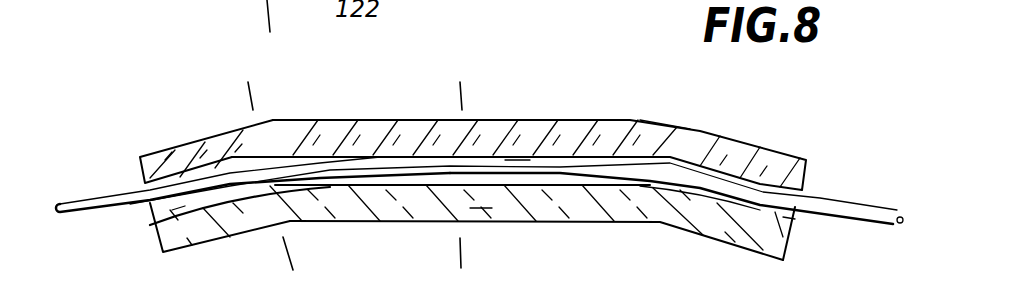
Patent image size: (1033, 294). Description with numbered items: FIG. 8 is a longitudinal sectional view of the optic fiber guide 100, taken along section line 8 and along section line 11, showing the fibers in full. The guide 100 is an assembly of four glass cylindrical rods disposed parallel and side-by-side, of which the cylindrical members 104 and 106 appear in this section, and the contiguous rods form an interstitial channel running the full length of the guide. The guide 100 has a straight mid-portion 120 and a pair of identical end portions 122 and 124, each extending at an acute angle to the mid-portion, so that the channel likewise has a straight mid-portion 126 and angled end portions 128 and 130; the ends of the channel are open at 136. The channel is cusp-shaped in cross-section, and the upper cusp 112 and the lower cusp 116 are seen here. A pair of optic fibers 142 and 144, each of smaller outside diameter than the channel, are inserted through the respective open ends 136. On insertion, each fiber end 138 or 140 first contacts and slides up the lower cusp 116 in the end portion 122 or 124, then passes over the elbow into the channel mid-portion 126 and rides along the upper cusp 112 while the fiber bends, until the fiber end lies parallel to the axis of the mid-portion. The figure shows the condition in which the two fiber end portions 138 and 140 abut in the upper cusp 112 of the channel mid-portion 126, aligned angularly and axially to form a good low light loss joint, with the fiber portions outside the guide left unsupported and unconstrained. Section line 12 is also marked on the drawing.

The section line 8— 8 is at (280, 37).
The section line of FIG. 11 is at (233, 84).
The section line 12 is at (450, 82).
The optic fiber guide 100 is at (672, 115).
The cylindrical member 104 is at (392, 127).
The cylindrical member 106 is at (405, 222).
The upper cusp 112 is at (293, 160).
The lower cusp 116 is at (216, 198).
The mid-portion of guide 120 is at (480, 208).
The end portion of guide 122 is at (200, 231).
The end portion of guide 124 is at (763, 240).
The mid-portion of channel 126 is at (575, 182).
The end portion of channel 128 is at (210, 173).
The end portion of channel 130 is at (703, 168).
The open channel end 136 is at (172, 210).
The end portion of optic fiber 138 is at (442, 157).
The end portion of optic fiber 140 is at (517, 160).
The optic fiber 142 is at (96, 198).
The optic fiber 144 is at (869, 210).